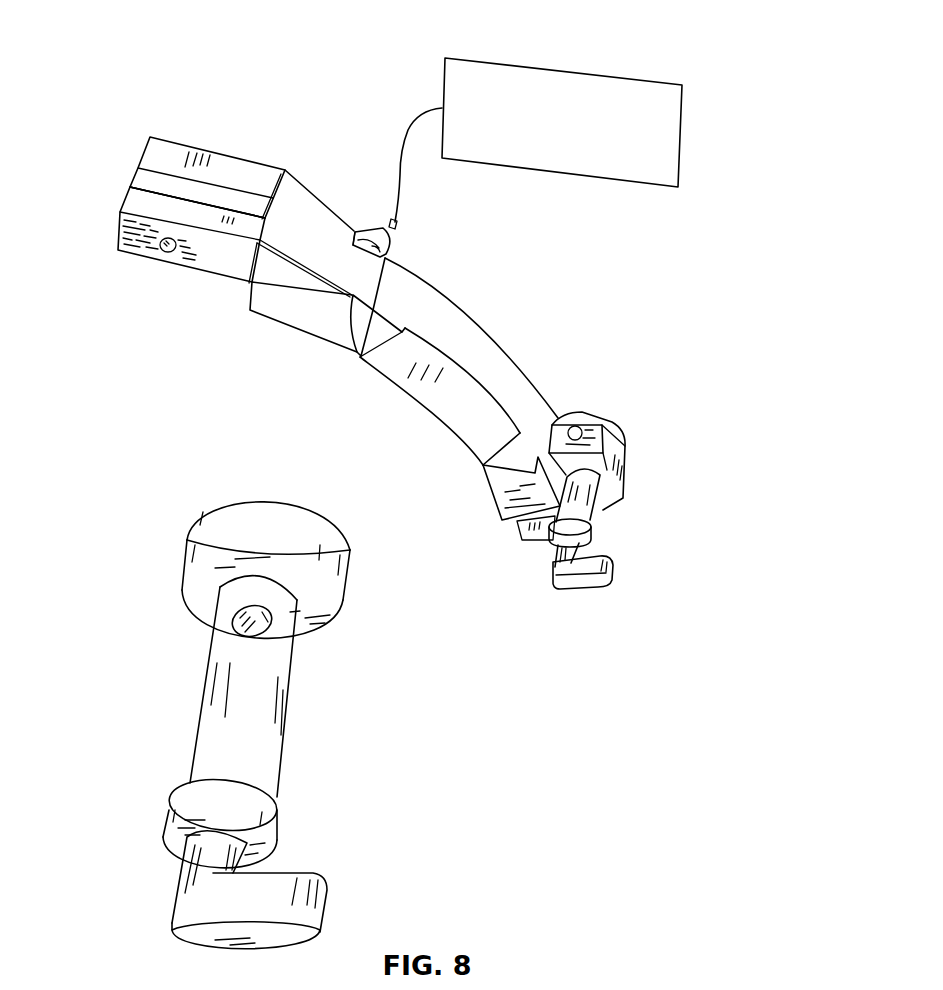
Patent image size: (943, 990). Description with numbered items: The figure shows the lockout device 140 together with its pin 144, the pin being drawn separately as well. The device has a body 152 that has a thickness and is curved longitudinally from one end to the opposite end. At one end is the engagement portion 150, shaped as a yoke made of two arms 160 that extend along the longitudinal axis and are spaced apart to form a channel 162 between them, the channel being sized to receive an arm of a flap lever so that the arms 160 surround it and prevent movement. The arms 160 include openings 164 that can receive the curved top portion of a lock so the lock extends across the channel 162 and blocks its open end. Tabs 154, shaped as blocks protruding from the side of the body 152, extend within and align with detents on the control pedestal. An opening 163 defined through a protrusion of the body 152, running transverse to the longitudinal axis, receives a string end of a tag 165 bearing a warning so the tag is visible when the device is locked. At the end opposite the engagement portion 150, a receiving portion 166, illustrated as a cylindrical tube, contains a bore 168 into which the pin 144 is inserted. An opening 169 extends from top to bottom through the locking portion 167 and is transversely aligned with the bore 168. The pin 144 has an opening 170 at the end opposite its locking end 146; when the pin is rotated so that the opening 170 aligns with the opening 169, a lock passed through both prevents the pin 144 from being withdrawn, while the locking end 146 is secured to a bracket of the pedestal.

In FIG. 4, the lockout device 140 is at (626, 237).
In FIG. 4, the pin 144 is at (594, 531).
In FIG. 8, the pin 144 is at (302, 688).
In FIG. 4, the locking end 146 is at (616, 578).
In FIG. 8, the locking end 146 is at (230, 893).
In FIG. 4, the engagement portion 150 is at (228, 120).
In FIG. 4, the body 152 is at (502, 348).
In FIG. 4, the tabs 154 is at (390, 323).
In FIG. 4, the arms 160 is at (158, 145).
In FIG. 4, the channel 162 is at (122, 176).
In FIG. 4, the opening 163 is at (361, 280).
In FIG. 4, the openings 164 is at (163, 252).
In FIG. 4, the tag 165 is at (626, 77).
In FIG. 4, the receiving portion 166 is at (597, 517).
In FIG. 4, the locking portion 167 is at (628, 463).
In FIG. 4, the bore 168 is at (558, 550).
In FIG. 4, the opening 169 is at (620, 422).
In FIG. 8, the opening 170 is at (232, 628).